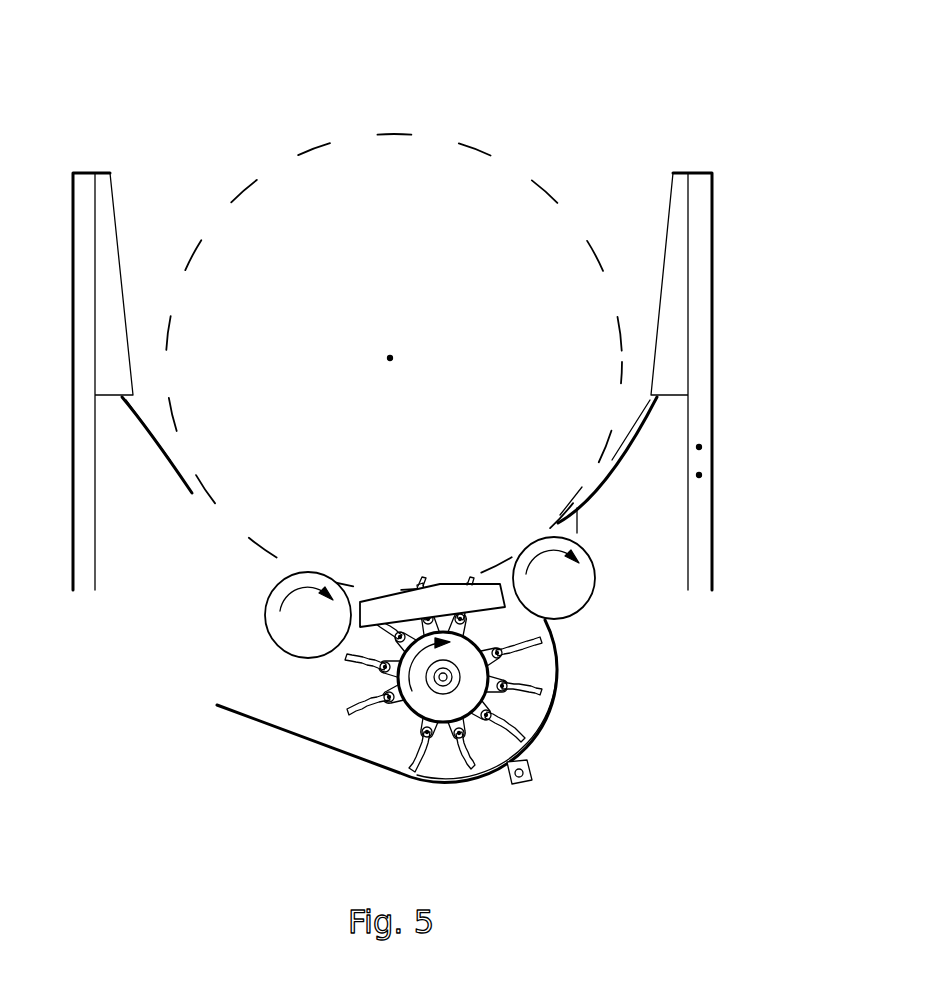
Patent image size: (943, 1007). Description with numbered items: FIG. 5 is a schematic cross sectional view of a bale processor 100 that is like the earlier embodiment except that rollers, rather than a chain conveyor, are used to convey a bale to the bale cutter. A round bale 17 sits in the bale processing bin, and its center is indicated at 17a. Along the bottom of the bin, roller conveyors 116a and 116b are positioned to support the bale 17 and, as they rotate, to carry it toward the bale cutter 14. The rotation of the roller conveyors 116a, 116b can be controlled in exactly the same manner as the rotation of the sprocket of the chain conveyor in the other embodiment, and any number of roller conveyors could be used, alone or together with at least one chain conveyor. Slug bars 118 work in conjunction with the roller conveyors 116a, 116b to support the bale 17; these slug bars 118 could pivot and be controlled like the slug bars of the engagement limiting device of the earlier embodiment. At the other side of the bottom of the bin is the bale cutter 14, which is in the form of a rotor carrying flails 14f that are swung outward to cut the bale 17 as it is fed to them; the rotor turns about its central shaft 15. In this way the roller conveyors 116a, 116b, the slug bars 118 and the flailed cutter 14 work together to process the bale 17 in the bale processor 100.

The bale processing apparatus 100 is at (608, 107).
The bale 17 is at (257, 207).
The bale center axis 17a is at (393, 357).
The roller conveyor 116a is at (293, 635).
The roller conveyor 116b is at (583, 582).
The slug bars 118 is at (427, 592).
The bale cutter 14 is at (443, 677).
The flails 14f is at (552, 638).
The rotor shaft 15 is at (447, 683).